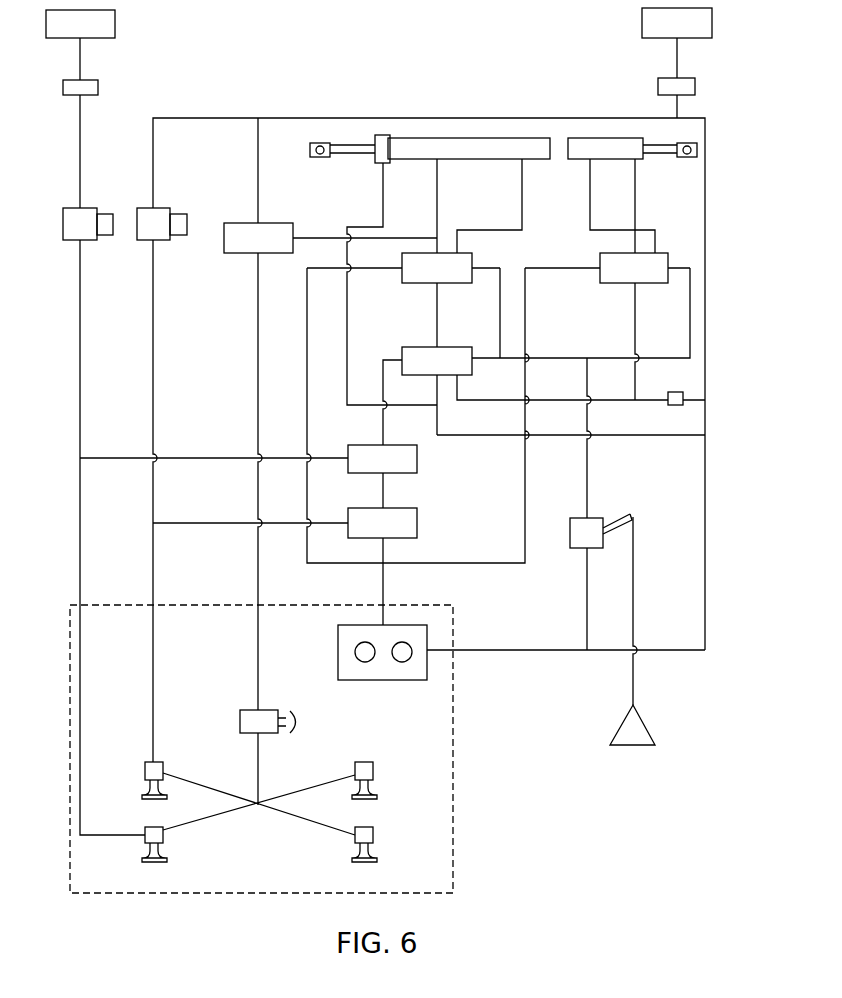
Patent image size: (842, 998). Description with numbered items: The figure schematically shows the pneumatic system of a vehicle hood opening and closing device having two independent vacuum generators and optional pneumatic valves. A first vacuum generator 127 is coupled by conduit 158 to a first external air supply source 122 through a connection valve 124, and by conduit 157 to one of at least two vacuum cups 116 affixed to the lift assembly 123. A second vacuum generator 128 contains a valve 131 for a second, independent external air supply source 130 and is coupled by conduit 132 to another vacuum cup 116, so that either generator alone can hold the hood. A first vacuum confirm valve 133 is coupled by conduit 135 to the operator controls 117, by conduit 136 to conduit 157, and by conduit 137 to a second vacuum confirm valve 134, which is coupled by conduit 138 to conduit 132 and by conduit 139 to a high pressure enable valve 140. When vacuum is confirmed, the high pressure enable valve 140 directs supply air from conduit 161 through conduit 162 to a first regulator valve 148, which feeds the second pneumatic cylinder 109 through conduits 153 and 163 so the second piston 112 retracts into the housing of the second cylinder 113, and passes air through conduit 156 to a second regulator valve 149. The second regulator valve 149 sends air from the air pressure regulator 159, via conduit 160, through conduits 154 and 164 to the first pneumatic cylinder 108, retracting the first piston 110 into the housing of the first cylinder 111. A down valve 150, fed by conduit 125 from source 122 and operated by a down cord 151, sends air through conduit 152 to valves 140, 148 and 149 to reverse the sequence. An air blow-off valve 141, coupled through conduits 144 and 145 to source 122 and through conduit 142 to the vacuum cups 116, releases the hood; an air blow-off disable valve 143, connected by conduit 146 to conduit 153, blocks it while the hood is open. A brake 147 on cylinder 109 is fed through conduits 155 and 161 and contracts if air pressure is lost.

The first pneumatic cylinder 108 is at (593, 137).
The second pneumatic cylinder 109 is at (478, 137).
The first piston 110 is at (665, 157).
The housing of the first cylinder 111 is at (622, 160).
The second piston 112 is at (355, 157).
The housing of the second cylinder 113 is at (418, 160).
The vacuum cups 116 is at (145, 768).
The operator controls 117 is at (390, 681).
The first external air supply source 122 is at (641, 20).
The lift assembly 123 is at (453, 792).
The connection valve 124 is at (657, 87).
The conduit 125 is at (705, 565).
The first vacuum generator 127 is at (165, 208).
The second vacuum generator 128 is at (92, 208).
The second external air supply source 130 is at (116, 18).
The valve 131 is at (99, 88).
The conduit 132 is at (80, 505).
The first vacuum confirm valve 133 is at (382, 523).
The second vacuum confirm valve 134 is at (382, 459).
The conduit 135 is at (382, 585).
The conduit 136 is at (330, 521).
The conduit 137 is at (385, 490).
The conduit 138 is at (325, 457).
The conduit 139 is at (383, 355).
The high pressure enable valve 140 is at (437, 361).
The air blow-off valve 141 is at (265, 710).
The conduit 142 is at (258, 752).
The air blow-off disable valve 143 is at (258, 238).
The conduit 144 is at (259, 330).
The conduit 145 is at (258, 165).
The conduit 146 is at (318, 238).
The brake 147 is at (375, 140).
The first regulator valve 148 is at (437, 268).
The second regulator valve 149 is at (634, 268).
The down valve 150 is at (570, 550).
The down cord 151 is at (633, 685).
The conduit 152 is at (500, 315).
The conduit 153 is at (438, 190).
The conduit 154 is at (636, 208).
The conduit 155 is at (347, 290).
The conduit 156 is at (307, 325).
The conduit 157 is at (153, 573).
The conduit 158 is at (222, 118).
The air pressure regulator 159 is at (668, 403).
The conduit 160 is at (635, 300).
The conduit 161 is at (480, 437).
The conduit 162 is at (437, 312).
The conduit 163 is at (520, 227).
The conduit 164 is at (590, 212).